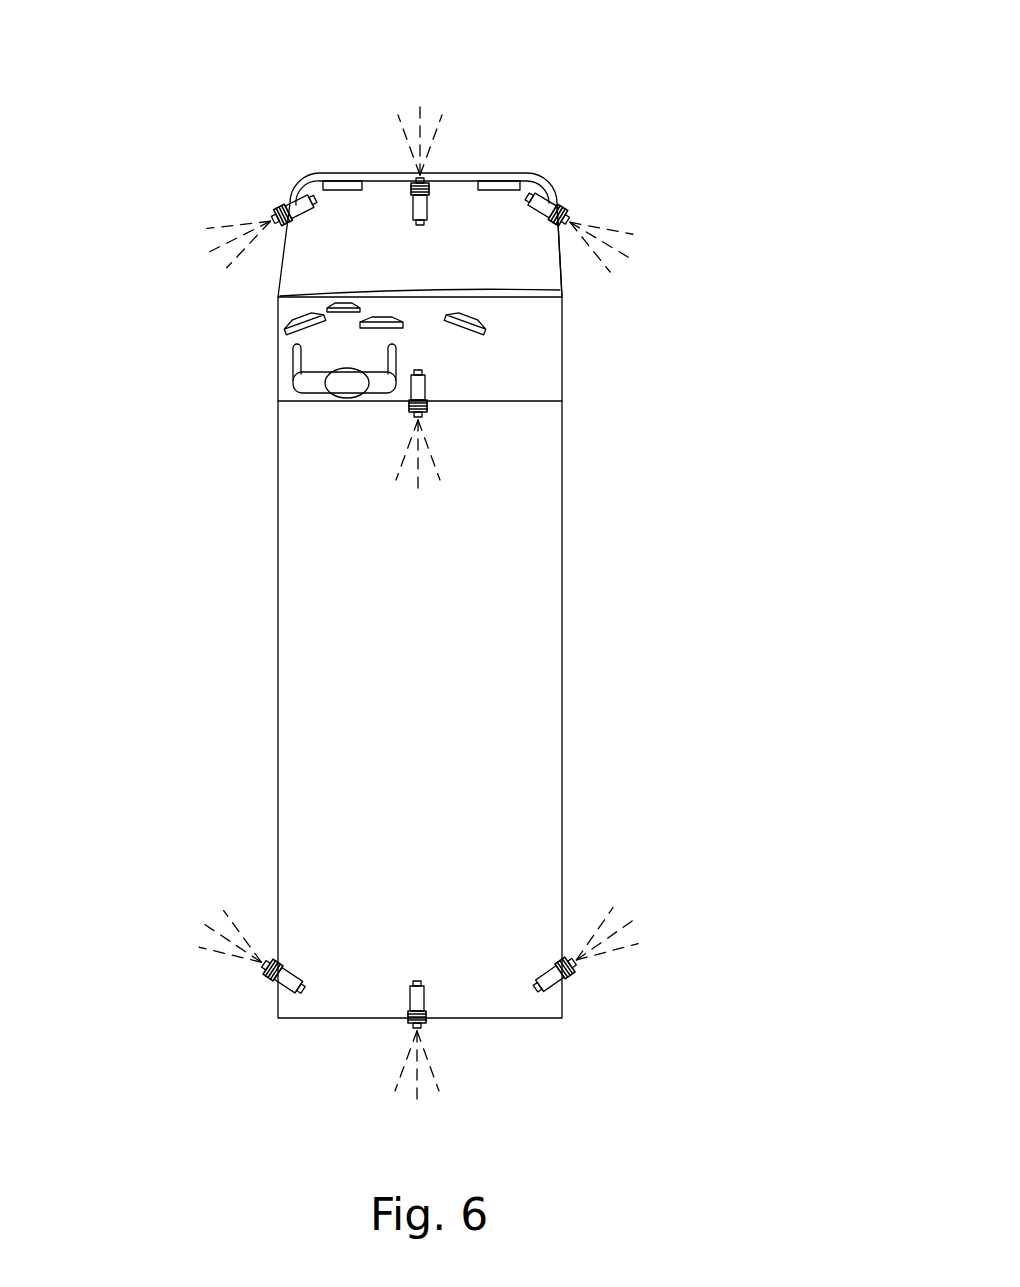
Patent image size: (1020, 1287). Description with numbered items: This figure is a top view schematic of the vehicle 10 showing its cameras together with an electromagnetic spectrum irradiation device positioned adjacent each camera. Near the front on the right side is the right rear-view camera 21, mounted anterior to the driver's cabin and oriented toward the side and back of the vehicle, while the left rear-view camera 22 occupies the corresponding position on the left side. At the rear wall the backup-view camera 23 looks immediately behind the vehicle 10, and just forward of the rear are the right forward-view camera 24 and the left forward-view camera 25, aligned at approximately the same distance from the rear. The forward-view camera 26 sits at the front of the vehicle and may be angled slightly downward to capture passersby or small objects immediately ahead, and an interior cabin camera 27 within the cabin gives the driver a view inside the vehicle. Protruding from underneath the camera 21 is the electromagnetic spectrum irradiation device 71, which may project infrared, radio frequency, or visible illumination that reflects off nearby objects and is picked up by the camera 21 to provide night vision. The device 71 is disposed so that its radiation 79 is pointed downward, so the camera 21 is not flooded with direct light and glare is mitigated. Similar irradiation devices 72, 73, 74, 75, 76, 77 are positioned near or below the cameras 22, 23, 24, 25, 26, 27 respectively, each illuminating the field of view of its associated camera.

The vehicle 10 is at (339, 595).
The right rear-view camera 21 is at (613, 171).
The left rear-view camera 22 is at (323, 136).
The backup-view camera 23 is at (478, 1040).
The right forward-view camera 24 is at (609, 1006).
The left forward-view camera 25 is at (240, 1018).
The forward-view camera 26 is at (498, 147).
The interior cabin camera 27 is at (538, 377).
The electromagnetic spectrum irradiation device 71 is at (615, 268).
The irradiation device 72 is at (191, 181).
The irradiation device 73 is at (370, 1074).
The irradiation device 74 is at (626, 904).
The irradiation device 75 is at (204, 949).
The irradiation device 76 is at (484, 92).
The irradiation device 77 is at (525, 459).
The radiation 79 is at (661, 221).